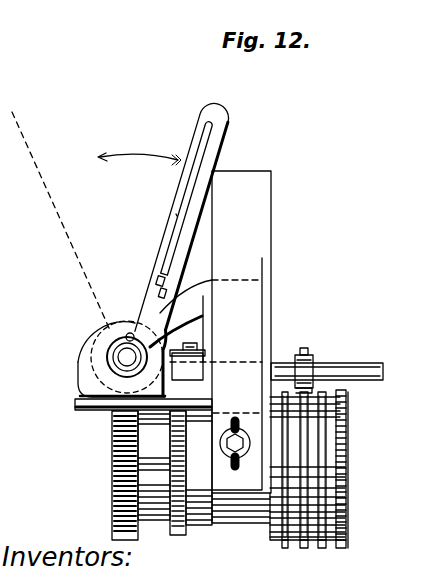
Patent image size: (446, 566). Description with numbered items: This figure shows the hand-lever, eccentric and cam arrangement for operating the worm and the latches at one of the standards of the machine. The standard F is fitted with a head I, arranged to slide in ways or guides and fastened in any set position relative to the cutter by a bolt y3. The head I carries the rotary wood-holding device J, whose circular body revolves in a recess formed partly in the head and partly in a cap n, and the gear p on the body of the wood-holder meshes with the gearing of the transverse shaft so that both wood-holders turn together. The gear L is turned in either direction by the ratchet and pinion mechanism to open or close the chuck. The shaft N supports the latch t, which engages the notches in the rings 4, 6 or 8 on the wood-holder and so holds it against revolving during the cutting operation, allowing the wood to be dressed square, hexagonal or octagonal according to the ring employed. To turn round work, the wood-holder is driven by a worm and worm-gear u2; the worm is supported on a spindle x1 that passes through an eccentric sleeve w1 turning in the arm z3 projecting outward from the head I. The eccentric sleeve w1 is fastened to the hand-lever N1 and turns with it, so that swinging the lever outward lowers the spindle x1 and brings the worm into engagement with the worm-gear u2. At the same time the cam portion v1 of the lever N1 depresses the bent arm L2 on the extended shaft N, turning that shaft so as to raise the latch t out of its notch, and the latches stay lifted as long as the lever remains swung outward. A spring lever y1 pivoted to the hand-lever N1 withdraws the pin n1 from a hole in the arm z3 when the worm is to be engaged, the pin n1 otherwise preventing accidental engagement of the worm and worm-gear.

The hand-lever N1 is at (179, 211).
The lever y1 is at (178, 217).
The standard F is at (270, 208).
The head I is at (227, 292).
The arm z3 is at (176, 329).
The spindle x1 is at (125, 358).
The pin n1 is at (130, 337).
The eccentric sleeve w1 is at (112, 366).
The cam portion v1 is at (88, 377).
The bent arm L2 is at (78, 411).
The worm-gear u2 is at (121, 461).
The bolt y3 is at (238, 433).
The latch t is at (306, 356).
The shaft N is at (357, 363).
The wood-holding device J is at (352, 487).
The gear L is at (343, 542).
The notched ring 6 is at (283, 478).
The notched ring 4 is at (302, 478).
The notched ring 8 is at (322, 478).
The gear p is at (186, 530).
The cap n is at (204, 480).